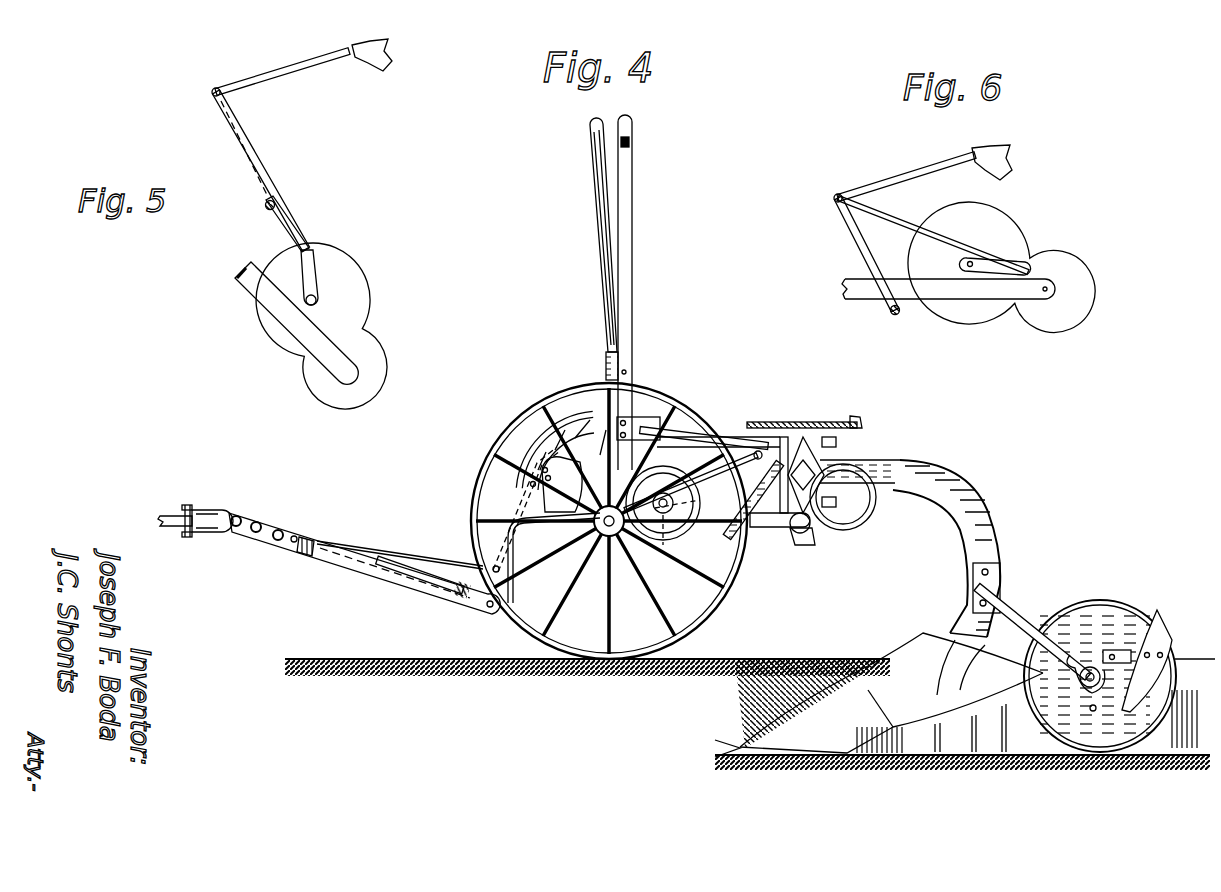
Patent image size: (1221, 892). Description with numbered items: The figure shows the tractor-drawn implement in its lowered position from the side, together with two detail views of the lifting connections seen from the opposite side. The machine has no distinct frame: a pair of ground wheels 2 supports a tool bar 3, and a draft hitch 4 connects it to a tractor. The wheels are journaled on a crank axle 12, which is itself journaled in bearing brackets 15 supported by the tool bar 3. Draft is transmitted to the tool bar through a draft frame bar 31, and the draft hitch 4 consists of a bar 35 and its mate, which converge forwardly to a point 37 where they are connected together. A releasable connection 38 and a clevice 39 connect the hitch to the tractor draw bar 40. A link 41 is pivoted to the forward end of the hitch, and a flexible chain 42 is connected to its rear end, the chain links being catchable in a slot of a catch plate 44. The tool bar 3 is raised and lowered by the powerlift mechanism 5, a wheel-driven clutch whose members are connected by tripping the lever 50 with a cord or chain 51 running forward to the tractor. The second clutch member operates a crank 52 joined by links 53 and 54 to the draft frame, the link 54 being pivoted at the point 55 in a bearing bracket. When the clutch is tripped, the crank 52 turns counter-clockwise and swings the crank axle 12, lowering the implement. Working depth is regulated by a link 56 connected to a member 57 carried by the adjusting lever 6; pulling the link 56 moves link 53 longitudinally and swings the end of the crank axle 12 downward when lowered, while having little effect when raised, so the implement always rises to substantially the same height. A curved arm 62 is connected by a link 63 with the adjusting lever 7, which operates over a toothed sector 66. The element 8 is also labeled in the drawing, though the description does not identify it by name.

In FIG. 4, the ground wheels 2 is at (563, 395).
In FIG. 4, the tool bar 3 is at (838, 462).
In FIG. 4, the draft hitch 4 is at (352, 582).
In FIG. 5, the powerlift mechanism 5 is at (362, 302).
In FIG. 6, the powerlift mechanism 5 is at (1002, 230).
In FIG. 4, the powerlift mechanism 5 is at (684, 530).
In FIG. 4, the adjusting lever 6 is at (631, 338).
In FIG. 4, the adjusting lever 7 is at (604, 321).
In FIG. 4, the standard 8 is at (968, 516).
In FIG. 5, the crank axle 12 is at (248, 283).
In FIG. 6, the crank axle 12 is at (998, 301).
In FIG. 4, the crank axle 12 is at (771, 529).
In FIG. 4, the bearing brackets 15 is at (809, 534).
In FIG. 4, the draft frame bar 31 is at (523, 533).
In FIG. 4, the hitch bar 35 is at (405, 578).
In FIG. 4, the point 37 is at (307, 555).
In FIG. 4, the releasable connection 38 is at (272, 529).
In FIG. 4, the clevice 39 is at (210, 509).
In FIG. 4, the tractor draw bar 40 is at (167, 508).
In FIG. 4, the link 41 is at (404, 553).
In FIG. 4, the flexible chain 42 is at (527, 488).
In FIG. 4, the catch plate 44 is at (566, 493).
In FIG. 4, the lever 50 is at (859, 424).
In FIG. 4, the cord or chain 51 is at (808, 422).
In FIG. 5, the crank 52 is at (313, 272).
In FIG. 6, the crank 52 is at (1033, 270).
In FIG. 4, the crank 52 is at (664, 548).
In FIG. 5, the link 53 is at (290, 218).
In FIG. 6, the link 53 is at (900, 226).
In FIG. 4, the link 53 is at (710, 474).
In FIG. 5, the link 54 is at (255, 185).
In FIG. 6, the link 54 is at (862, 252).
In FIG. 4, the link 54 is at (736, 546).
In FIG. 5, the pivot 55 is at (267, 212).
In FIG. 6, the pivot 55 is at (896, 316).
In FIG. 5, the link 56 is at (297, 70).
In FIG. 6, the link 56 is at (898, 182).
In FIG. 4, the link 56 is at (690, 428).
In FIG. 4, the member 57 is at (660, 420).
In FIG. 4, the curved arm 62 is at (871, 519).
In FIG. 4, the link 63 is at (729, 440).
In FIG. 4, the toothed sector 66 is at (584, 426).